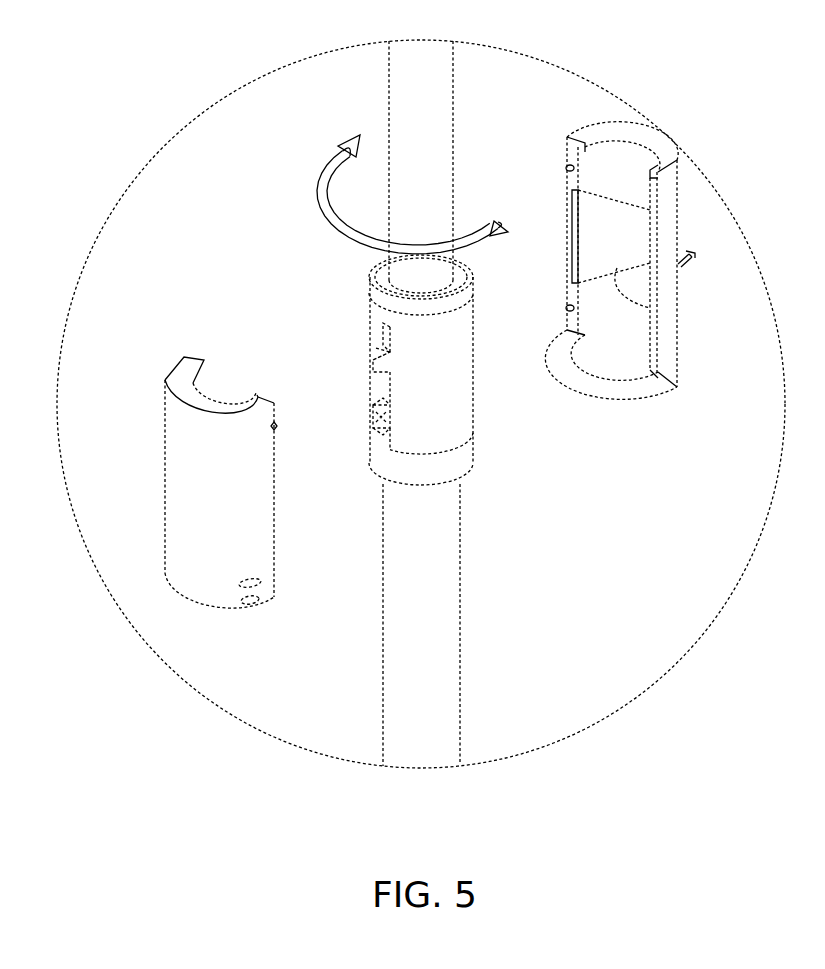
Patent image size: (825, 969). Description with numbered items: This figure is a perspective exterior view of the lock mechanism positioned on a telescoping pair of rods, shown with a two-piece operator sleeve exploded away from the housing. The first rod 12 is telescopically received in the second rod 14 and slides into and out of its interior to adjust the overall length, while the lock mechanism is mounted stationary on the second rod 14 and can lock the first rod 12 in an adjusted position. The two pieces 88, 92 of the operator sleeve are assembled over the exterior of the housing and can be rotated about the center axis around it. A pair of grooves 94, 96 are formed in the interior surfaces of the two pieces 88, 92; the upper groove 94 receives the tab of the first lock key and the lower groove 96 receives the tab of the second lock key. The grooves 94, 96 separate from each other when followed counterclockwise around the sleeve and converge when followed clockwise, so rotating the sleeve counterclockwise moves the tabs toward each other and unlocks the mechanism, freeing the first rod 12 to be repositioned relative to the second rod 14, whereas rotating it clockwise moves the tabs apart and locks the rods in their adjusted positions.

The first rod 12 is at (437, 80).
The second rod 14 is at (400, 703).
The operator sleeve piece 88 is at (647, 217).
The operator sleeve piece 92 is at (170, 588).
The upper groove 94 is at (617, 190).
The lower groove 96 is at (617, 272).